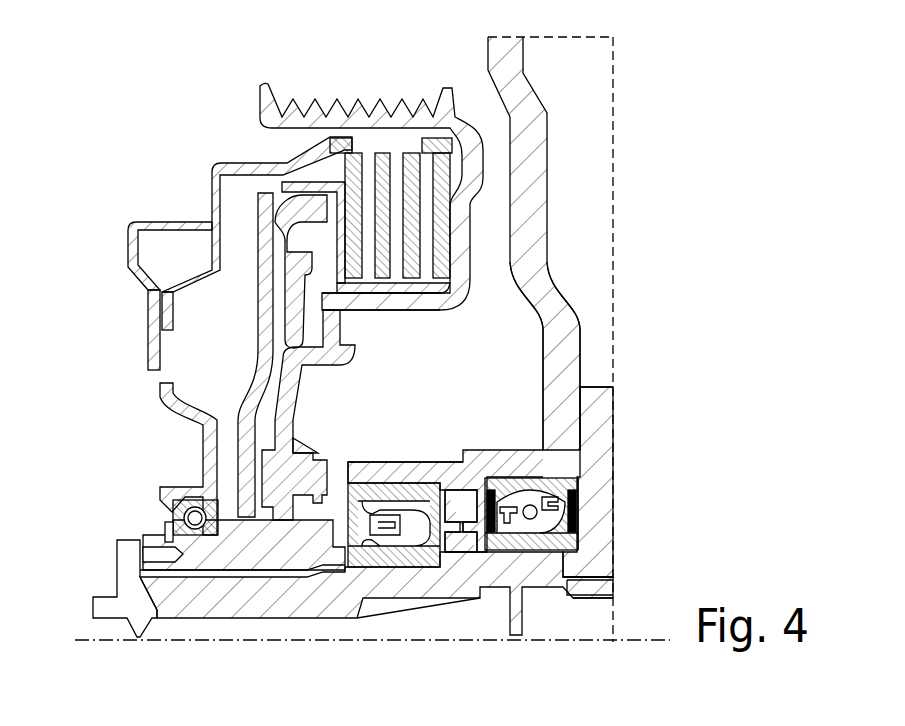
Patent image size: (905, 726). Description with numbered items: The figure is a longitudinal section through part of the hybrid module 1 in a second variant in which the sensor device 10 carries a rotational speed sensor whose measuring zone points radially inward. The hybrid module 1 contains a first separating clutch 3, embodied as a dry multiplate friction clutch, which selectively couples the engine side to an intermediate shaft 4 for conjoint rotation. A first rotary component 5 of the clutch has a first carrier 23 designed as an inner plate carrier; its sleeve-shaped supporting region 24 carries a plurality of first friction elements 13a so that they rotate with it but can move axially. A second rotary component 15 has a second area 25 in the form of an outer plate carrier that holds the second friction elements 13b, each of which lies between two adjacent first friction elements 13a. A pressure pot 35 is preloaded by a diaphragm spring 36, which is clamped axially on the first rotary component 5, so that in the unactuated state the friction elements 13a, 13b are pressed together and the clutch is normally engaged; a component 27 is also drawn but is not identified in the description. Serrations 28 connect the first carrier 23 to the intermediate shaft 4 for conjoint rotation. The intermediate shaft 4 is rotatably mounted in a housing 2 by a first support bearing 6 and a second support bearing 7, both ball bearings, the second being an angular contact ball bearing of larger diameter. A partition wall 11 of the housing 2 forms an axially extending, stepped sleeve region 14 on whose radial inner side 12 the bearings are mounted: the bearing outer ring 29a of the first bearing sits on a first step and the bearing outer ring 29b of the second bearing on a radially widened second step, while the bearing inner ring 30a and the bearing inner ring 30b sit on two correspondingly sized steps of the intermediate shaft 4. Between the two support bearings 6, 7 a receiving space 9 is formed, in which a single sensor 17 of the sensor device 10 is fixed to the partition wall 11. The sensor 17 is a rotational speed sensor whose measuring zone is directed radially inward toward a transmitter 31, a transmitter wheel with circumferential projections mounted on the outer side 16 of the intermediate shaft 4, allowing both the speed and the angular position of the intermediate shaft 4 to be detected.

The hybrid module 1 is at (129, 97).
The housing 2 is at (540, 290).
The first separating clutch 3 is at (497, 177).
The intermediate shaft 4 is at (327, 593).
The first rotary component 5 is at (480, 309).
The first support bearing 6 is at (389, 577).
The second support bearing 7 is at (590, 523).
The receiving space 9 is at (449, 562).
The sensor device 10 is at (455, 478).
The partition wall 11 is at (526, 296).
The radial inner side 12 is at (522, 497).
The first friction elements 13a is at (400, 265).
The second friction elements 13b is at (410, 224).
The sleeve region 14 is at (494, 467).
The second rotary component 15 is at (163, 195).
The outer side 16 is at (334, 545).
The sensor 17 is at (495, 490).
The first carrier 23 is at (327, 347).
The supporting region 24 is at (408, 303).
The second area 25 is at (245, 175).
The spring 27 is at (337, 110).
The serrations 28 is at (212, 582).
The bearing outer ring 29a is at (375, 495).
The bearing outer ring 29b is at (513, 488).
The bearing inner ring 30a is at (363, 557).
The bearing inner ring 30b is at (560, 538).
The transmitter 31 is at (463, 545).
The pressure pot 35 is at (300, 263).
The diaphragm spring 36 is at (280, 318).